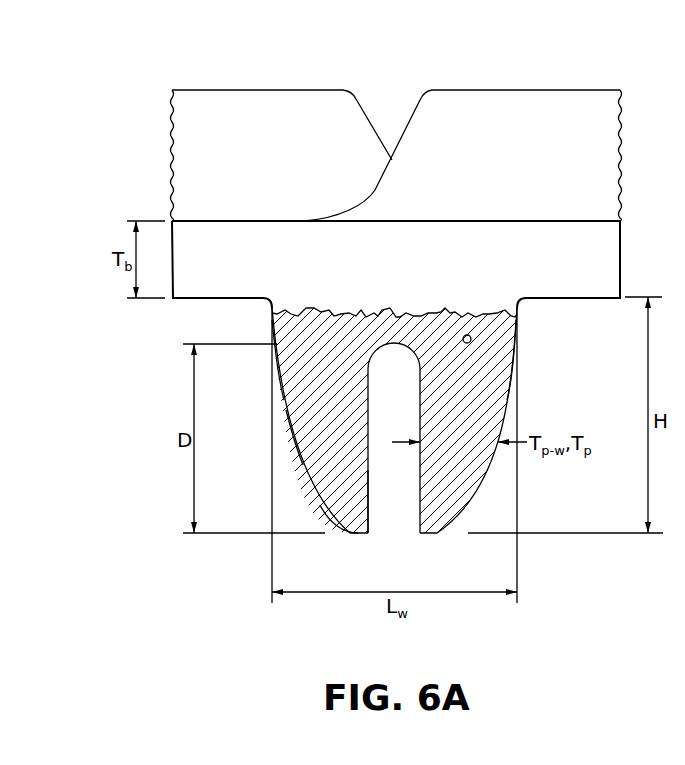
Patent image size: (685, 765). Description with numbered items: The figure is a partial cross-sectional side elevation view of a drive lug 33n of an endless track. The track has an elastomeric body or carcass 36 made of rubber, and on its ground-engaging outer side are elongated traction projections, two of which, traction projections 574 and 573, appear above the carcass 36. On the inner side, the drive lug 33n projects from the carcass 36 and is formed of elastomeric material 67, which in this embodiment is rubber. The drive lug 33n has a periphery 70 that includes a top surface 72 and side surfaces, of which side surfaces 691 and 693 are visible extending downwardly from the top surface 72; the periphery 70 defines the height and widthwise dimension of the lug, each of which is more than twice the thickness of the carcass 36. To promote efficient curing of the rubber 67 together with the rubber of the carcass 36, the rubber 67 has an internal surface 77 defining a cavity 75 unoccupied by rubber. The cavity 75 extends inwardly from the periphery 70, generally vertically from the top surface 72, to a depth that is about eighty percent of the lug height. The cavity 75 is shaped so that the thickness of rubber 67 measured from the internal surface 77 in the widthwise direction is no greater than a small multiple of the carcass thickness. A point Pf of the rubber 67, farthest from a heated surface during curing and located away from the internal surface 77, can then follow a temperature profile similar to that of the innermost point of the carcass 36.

The traction projection 574 is at (257, 120).
The traction projection 573 is at (521, 120).
The elastomeric body (carcass) 36 is at (604, 248).
The drive lug 33n is at (549, 338).
The elastomeric material (rubber) 67 is at (457, 478).
The side surface 691 is at (282, 390).
The side surface 693 is at (507, 396).
The periphery 70 is at (300, 458).
The top surface 72 is at (351, 535).
The cavity (internal space) 75 is at (406, 405).
The internal surface 77 is at (369, 489).
The point Pf is at (471, 341).